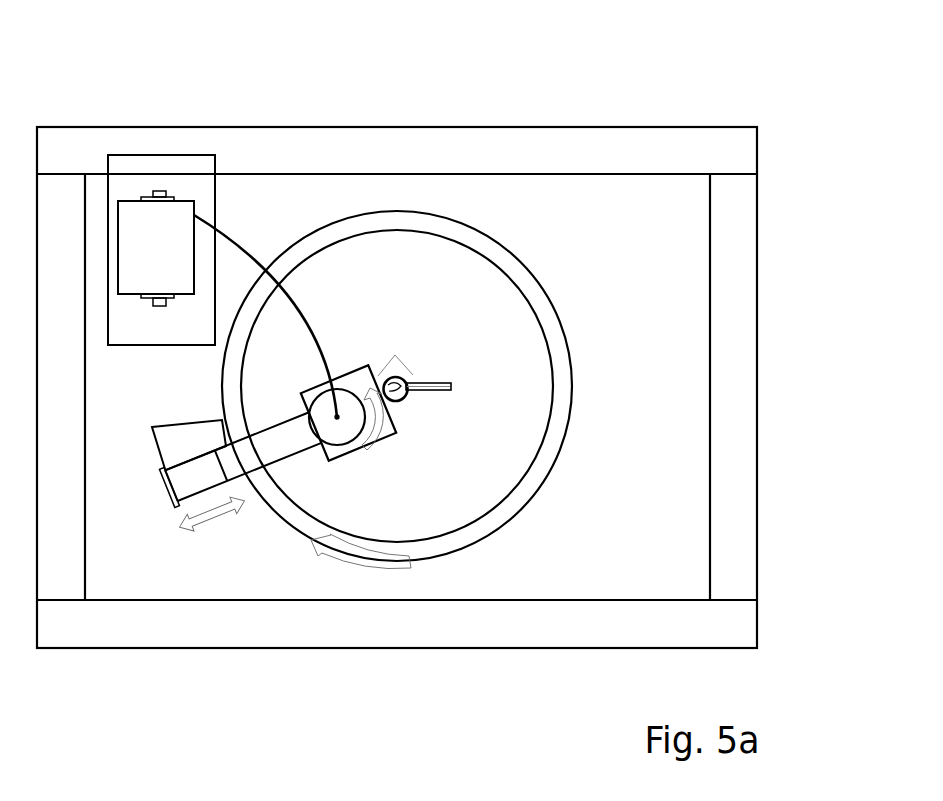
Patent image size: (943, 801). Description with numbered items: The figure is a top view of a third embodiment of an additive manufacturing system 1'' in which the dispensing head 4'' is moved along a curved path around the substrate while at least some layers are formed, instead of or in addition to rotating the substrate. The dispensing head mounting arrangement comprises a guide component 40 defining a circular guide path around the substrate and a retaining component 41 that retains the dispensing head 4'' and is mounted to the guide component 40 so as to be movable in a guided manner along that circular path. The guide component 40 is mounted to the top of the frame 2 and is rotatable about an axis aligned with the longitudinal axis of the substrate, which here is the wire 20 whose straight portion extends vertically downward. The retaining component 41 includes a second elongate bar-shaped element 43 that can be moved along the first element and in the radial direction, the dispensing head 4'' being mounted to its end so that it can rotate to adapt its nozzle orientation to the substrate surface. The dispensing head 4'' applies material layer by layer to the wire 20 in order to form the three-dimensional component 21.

The system 1'' is at (419, 363).
The frame 2 is at (742, 342).
The guide component 40 is at (425, 220).
The retaining component 41 is at (232, 530).
The second elongate bar-shaped element 43 is at (278, 443).
The dispensing head 4'' is at (372, 430).
The wire 20 is at (410, 378).
The three-dimensional component 21 is at (448, 390).